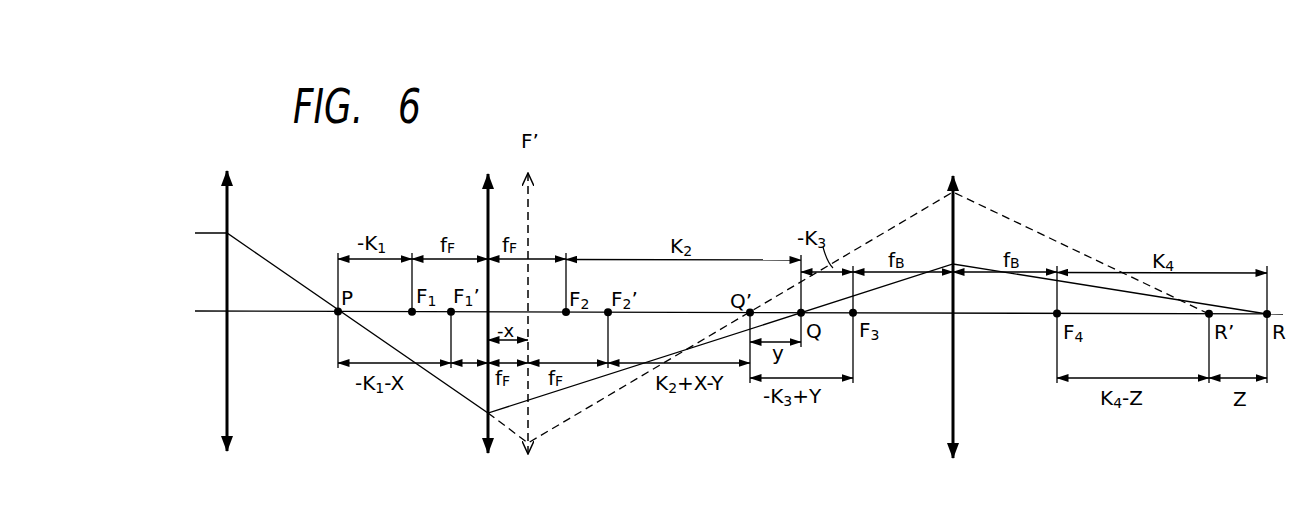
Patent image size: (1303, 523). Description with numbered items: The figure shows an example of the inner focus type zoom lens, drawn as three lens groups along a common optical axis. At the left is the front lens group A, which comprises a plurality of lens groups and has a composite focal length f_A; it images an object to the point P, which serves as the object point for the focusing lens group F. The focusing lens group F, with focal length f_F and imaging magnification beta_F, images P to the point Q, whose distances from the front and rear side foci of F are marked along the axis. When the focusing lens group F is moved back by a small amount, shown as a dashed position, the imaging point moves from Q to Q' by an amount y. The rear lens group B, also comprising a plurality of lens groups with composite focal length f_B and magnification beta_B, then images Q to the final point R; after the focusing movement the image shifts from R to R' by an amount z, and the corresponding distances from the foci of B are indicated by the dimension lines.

The front lens group A is at (225, 290).
The focusing lens group F is at (487, 291).
The rear lens group B is at (952, 297).